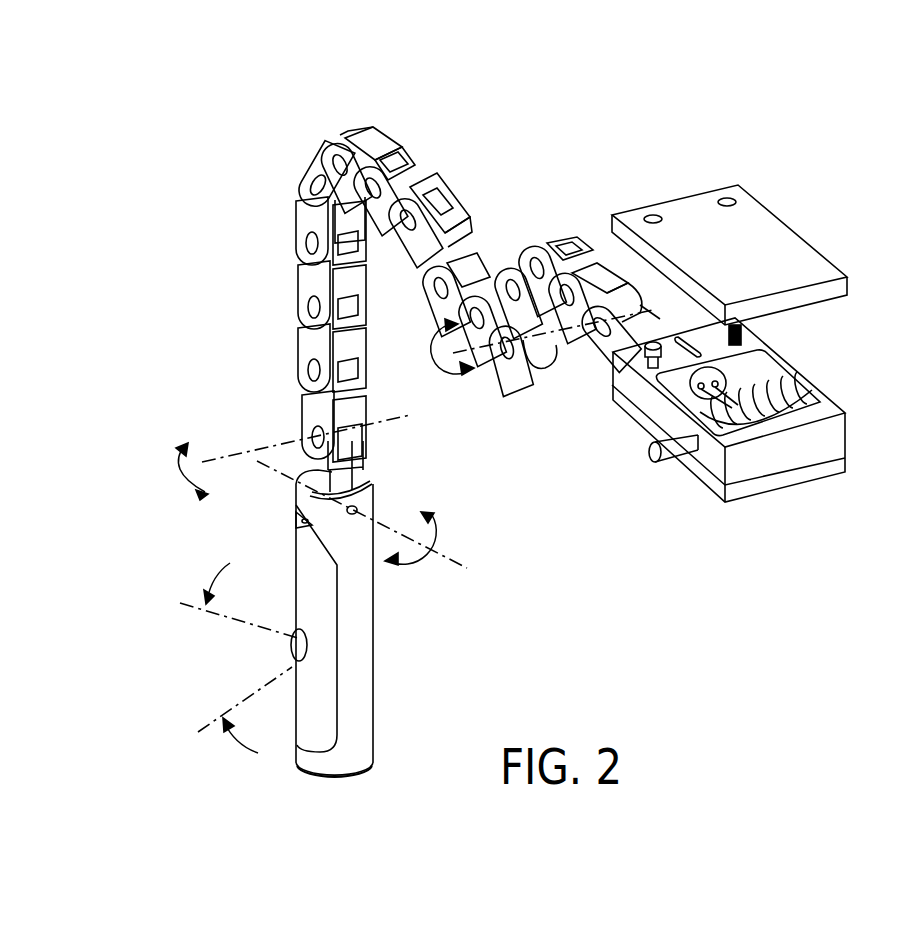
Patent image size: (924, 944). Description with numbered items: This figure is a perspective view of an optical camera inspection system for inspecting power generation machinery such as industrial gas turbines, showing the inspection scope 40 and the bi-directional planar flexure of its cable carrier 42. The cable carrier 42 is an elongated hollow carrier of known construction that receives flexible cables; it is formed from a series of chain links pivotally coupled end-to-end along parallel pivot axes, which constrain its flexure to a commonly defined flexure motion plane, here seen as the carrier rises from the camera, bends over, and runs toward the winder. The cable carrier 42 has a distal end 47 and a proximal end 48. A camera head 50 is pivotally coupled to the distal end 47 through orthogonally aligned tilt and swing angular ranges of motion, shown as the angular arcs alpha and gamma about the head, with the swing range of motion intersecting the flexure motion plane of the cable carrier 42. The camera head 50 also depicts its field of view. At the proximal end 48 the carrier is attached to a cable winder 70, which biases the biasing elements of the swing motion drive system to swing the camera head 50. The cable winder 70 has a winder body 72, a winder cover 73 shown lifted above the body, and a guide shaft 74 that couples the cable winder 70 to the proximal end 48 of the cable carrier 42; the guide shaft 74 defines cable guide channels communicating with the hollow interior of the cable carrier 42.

The inspection scope 40 is at (232, 212).
The cable carrier 42 is at (448, 128).
The distal end 47 is at (368, 437).
The proximal end 48 is at (602, 342).
The camera head 50 is at (402, 652).
The cable winder 70 is at (795, 508).
The winder body 72 is at (828, 382).
The winder cover 73 is at (772, 245).
The guide shaft 74 is at (652, 342).